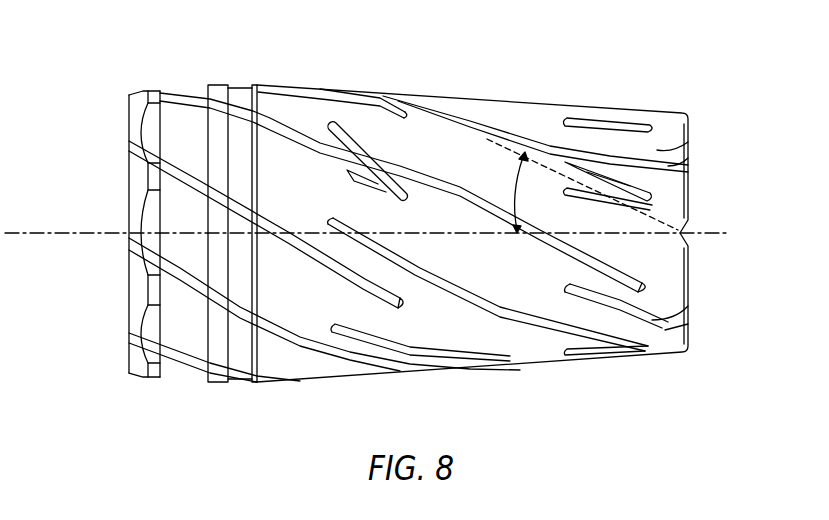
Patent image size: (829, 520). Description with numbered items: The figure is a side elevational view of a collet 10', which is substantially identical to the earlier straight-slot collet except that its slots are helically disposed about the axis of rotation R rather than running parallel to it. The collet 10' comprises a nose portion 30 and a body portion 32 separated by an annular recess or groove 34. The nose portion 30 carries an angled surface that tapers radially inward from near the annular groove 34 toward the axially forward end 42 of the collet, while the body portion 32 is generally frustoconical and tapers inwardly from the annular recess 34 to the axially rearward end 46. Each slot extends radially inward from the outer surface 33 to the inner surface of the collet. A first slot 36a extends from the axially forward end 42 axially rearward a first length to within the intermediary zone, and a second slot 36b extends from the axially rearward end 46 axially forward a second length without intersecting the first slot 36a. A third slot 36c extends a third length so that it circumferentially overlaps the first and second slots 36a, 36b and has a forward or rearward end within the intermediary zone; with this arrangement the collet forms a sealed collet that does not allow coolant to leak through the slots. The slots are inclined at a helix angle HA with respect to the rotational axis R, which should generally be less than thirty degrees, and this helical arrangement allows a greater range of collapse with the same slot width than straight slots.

The collet 10' is at (381, 199).
The nose portion 30 is at (137, 86).
The axially forward end 42 is at (127, 125).
The annular recess or groove 34 is at (180, 86).
The body portion 32 is at (556, 86).
The outer surface 33 is at (432, 128).
The first slot 36a is at (178, 178).
The second slot 36b is at (652, 320).
The third slot 36c is at (450, 182).
The axially rearward end 46 is at (693, 176).
The helix angle HA is at (525, 207).
The axis of rotation R is at (708, 236).